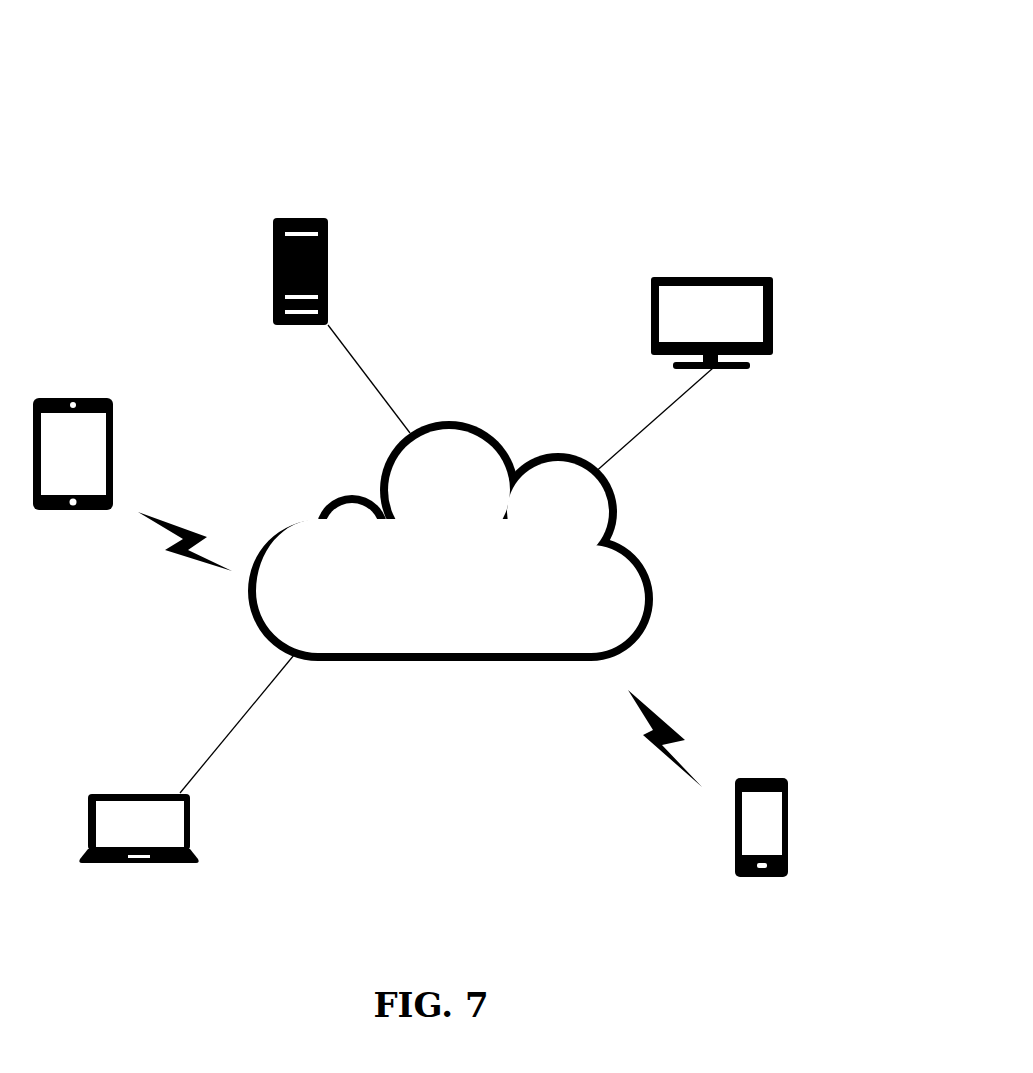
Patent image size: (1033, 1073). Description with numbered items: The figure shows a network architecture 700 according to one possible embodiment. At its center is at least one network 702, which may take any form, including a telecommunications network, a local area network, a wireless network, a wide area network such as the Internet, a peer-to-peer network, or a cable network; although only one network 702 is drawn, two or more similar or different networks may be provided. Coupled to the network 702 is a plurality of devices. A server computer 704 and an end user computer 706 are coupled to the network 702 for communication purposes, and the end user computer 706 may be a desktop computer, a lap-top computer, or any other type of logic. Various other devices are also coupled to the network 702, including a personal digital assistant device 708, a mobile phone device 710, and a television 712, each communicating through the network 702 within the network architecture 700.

The network architecture 700 is at (80, 101).
The network 702 is at (460, 662).
The server computer 704 is at (299, 218).
The end user computer 706 is at (133, 794).
The personal digital assistant (PDA) device 708 is at (75, 398).
The mobile phone device 710 is at (754, 778).
The television 712 is at (716, 277).